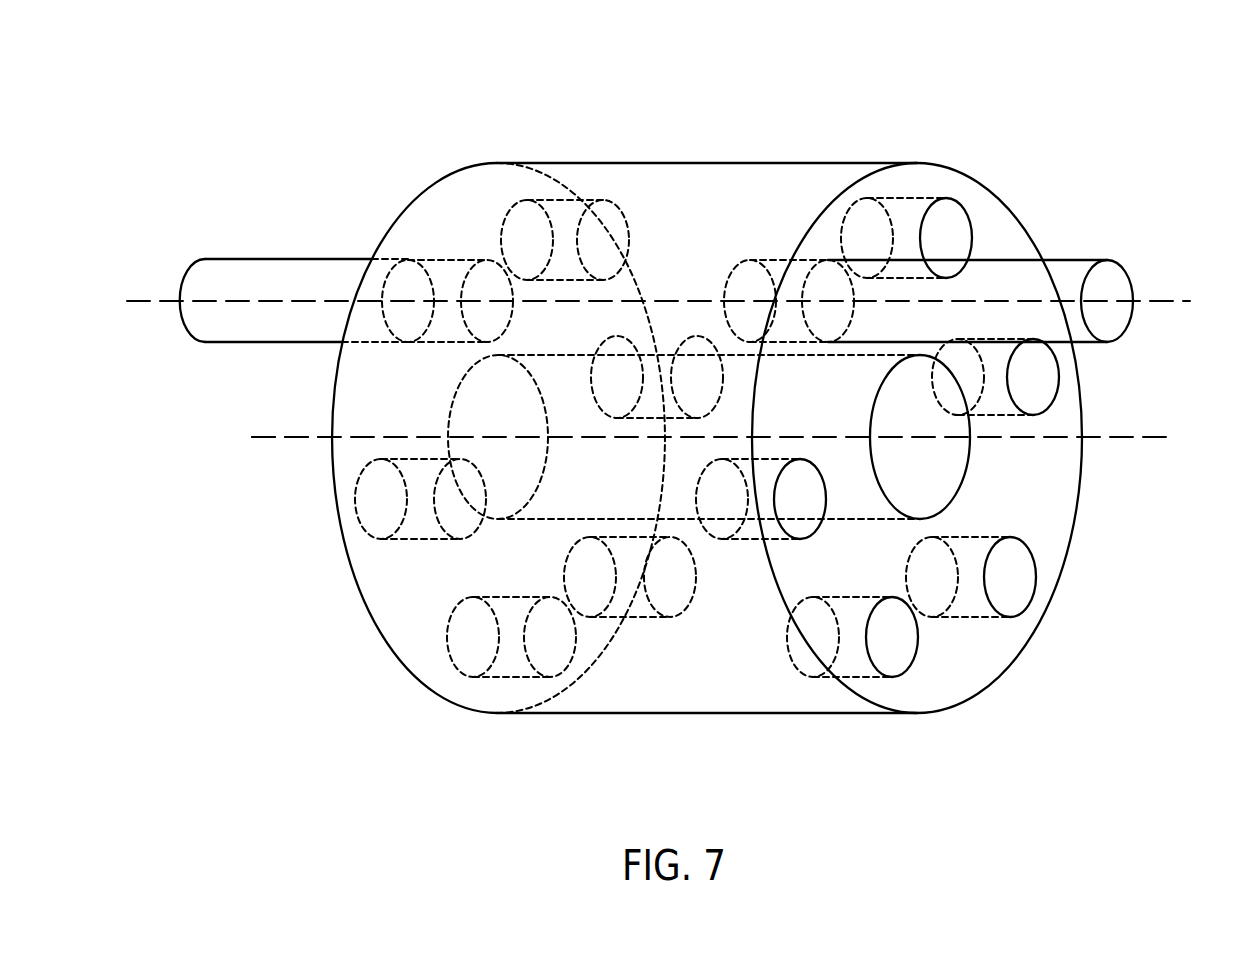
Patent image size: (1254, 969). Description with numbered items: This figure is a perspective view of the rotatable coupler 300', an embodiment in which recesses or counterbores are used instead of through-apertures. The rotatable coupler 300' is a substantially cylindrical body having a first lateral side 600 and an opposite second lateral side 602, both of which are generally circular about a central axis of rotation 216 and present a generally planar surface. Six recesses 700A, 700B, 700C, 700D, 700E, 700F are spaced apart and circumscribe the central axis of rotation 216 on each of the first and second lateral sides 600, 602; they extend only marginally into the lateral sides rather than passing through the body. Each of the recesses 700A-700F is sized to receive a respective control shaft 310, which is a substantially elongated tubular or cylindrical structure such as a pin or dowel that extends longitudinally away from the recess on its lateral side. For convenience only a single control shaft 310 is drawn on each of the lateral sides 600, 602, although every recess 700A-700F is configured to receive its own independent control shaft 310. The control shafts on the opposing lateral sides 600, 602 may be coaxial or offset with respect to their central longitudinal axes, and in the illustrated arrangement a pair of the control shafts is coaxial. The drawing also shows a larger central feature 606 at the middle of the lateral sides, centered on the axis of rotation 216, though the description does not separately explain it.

The rotatable coupler 300' is at (707, 365).
The control shaft 310 is at (252, 259).
The central axis of rotation 216 is at (292, 440).
The first lateral side 600 is at (1010, 242).
The second lateral side 602 is at (395, 407).
The central bore 606 is at (965, 472).
The recess 700A is at (398, 298).
The recess 700B is at (950, 218).
The recess 700C is at (1042, 387).
The recess 700D is at (1015, 580).
The recess 700E is at (900, 648).
The recess 700F is at (797, 510).